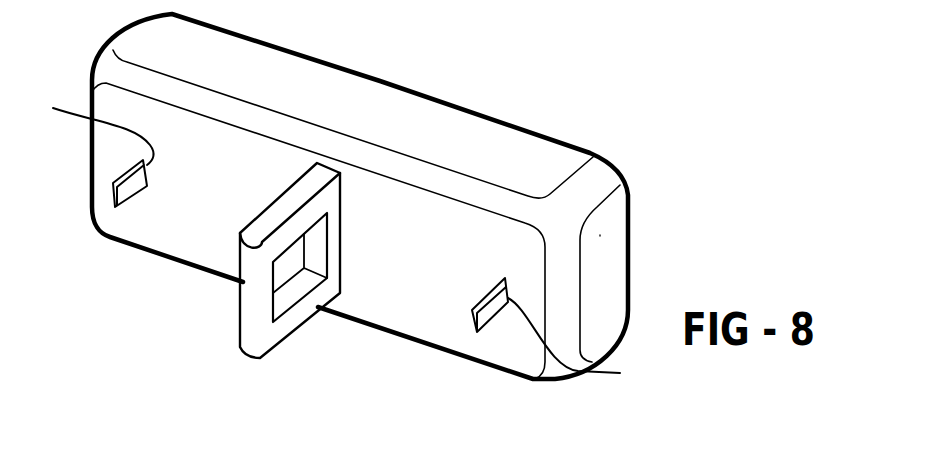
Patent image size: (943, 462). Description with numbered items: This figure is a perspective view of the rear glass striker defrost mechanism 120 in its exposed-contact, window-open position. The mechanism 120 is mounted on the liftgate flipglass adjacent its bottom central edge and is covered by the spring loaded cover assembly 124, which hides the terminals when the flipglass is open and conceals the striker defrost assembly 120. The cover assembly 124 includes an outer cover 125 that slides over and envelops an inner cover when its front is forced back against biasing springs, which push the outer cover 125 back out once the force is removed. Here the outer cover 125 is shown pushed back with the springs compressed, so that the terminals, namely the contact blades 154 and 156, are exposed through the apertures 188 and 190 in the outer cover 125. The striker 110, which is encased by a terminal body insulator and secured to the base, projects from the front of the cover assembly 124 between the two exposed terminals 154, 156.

The striker 110 is at (245, 312).
The rear glass striker defrost mechanism 120 is at (615, 152).
The spring loaded cover assembly 124 is at (607, 237).
The outer cover 125 is at (613, 283).
The contact blade 154 is at (113, 213).
The contact blade 156 is at (472, 319).
The aperture 188 is at (84, 130).
The aperture 190 is at (584, 341).